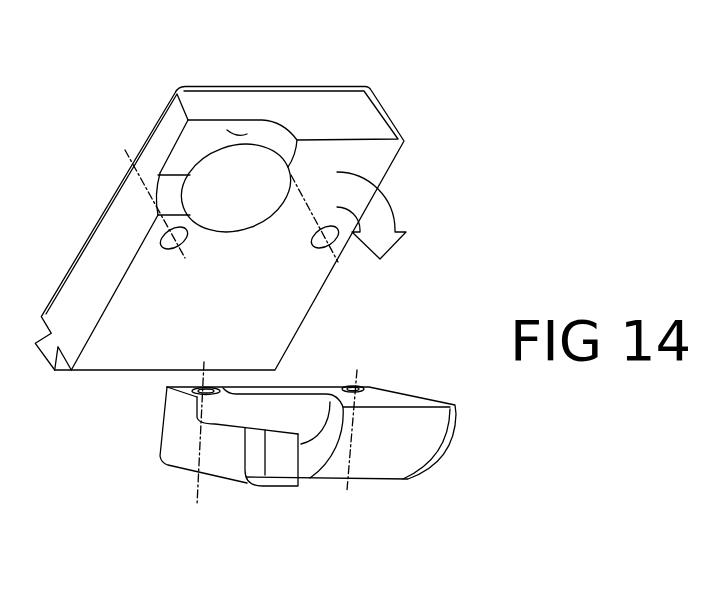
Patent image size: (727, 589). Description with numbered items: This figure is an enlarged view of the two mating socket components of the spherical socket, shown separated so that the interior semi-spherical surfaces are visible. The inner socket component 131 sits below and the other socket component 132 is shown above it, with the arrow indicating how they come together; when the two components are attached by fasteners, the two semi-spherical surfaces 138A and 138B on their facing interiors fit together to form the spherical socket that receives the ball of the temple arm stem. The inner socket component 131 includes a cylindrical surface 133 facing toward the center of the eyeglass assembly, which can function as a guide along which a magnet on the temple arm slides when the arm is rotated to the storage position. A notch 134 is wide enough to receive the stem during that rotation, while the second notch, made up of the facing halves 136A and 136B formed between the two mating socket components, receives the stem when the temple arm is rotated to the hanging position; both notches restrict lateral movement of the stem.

The socket component 131 is at (183, 449).
The socket component 132 is at (327, 150).
The cylindrical surface 133 is at (410, 444).
The notch 134 is at (307, 466).
The notch half 136A is at (237, 423).
The notch half 136B is at (267, 120).
The semi-spherical surface 138A is at (300, 408).
The semi-spherical surface 138B is at (240, 181).